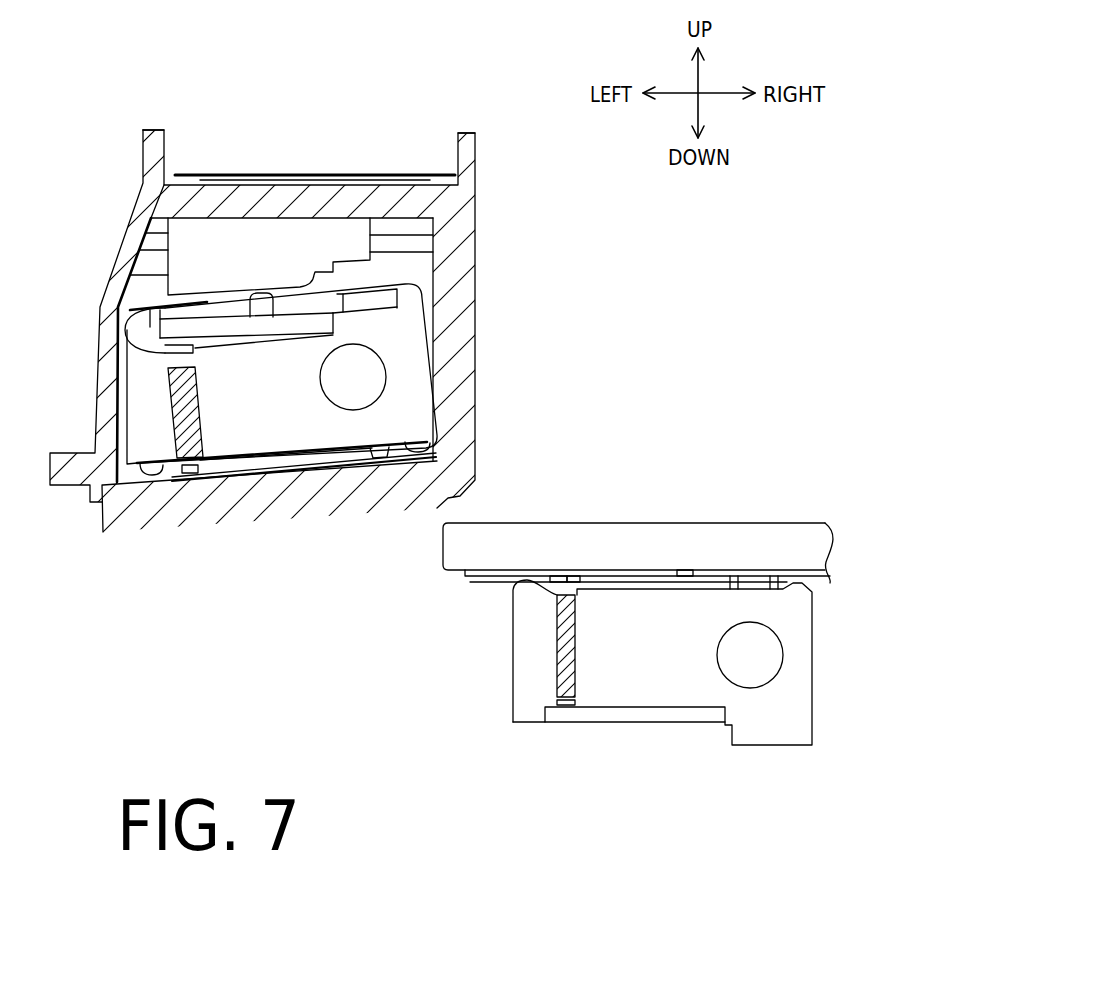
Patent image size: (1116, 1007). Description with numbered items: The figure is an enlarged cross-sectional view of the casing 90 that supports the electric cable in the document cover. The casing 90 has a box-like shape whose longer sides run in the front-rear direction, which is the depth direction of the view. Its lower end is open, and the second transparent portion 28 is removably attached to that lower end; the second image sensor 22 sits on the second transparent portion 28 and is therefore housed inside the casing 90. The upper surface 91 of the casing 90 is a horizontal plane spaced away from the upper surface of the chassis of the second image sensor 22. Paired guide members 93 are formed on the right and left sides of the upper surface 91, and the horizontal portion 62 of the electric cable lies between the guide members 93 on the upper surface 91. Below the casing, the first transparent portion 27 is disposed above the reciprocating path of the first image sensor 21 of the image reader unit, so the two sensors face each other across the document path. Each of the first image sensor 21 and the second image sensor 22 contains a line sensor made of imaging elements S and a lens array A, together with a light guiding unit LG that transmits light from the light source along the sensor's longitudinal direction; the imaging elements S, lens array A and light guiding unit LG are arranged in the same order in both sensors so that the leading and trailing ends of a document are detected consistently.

The first image sensor 21 is at (628, 680).
The second image sensor 22 is at (410, 357).
The first transparent portion 27 is at (617, 543).
The second transparent portion 28 is at (273, 497).
The horizontal portion 62 is at (295, 172).
The casing 90 is at (476, 251).
The upper surface 91 is at (187, 173).
The guide members 93 is at (152, 128).
The lens array A is at (173, 417).
The imaging elements S is at (102, 306).
The light guiding unit LG is at (345, 388).